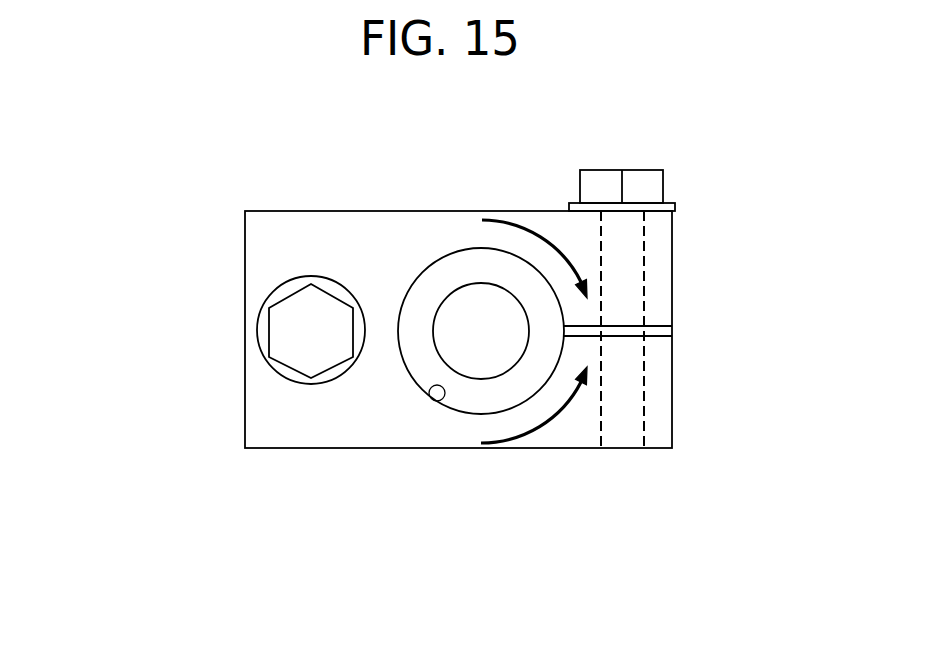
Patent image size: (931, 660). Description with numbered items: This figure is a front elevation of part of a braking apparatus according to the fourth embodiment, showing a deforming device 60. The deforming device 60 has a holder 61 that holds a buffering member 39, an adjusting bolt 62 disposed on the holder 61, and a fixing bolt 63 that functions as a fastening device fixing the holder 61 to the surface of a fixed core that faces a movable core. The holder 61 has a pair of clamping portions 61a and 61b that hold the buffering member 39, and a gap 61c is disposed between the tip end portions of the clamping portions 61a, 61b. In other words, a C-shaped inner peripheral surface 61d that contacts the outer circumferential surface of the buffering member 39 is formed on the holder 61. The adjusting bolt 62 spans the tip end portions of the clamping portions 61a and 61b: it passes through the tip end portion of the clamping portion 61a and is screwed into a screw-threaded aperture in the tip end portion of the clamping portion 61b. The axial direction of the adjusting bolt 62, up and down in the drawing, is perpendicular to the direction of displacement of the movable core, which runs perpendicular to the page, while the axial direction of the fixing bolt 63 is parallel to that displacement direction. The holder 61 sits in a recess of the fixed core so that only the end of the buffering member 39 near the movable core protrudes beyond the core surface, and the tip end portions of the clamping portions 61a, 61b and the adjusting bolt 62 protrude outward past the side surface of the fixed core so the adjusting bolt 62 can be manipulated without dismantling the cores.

The buffering member 39 is at (450, 273).
The deforming device 60 is at (245, 271).
The holder 61 is at (315, 430).
The clamping portion 61a is at (517, 243).
The clamping portion 61b is at (500, 430).
The gap 61c is at (657, 320).
The C-shaped inner peripheral surface 61d is at (443, 400).
The adjusting bolt 62 is at (663, 185).
The fixing bolt 63 is at (287, 345).